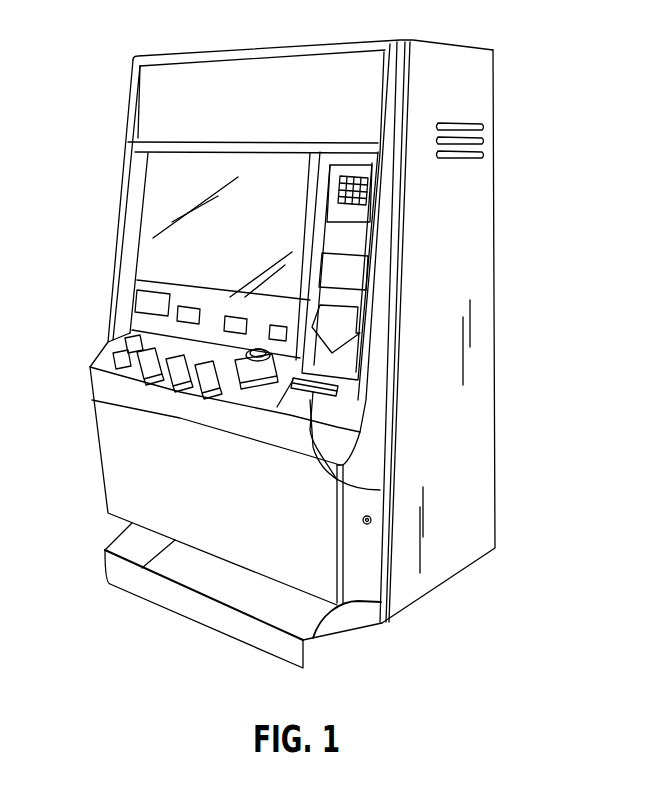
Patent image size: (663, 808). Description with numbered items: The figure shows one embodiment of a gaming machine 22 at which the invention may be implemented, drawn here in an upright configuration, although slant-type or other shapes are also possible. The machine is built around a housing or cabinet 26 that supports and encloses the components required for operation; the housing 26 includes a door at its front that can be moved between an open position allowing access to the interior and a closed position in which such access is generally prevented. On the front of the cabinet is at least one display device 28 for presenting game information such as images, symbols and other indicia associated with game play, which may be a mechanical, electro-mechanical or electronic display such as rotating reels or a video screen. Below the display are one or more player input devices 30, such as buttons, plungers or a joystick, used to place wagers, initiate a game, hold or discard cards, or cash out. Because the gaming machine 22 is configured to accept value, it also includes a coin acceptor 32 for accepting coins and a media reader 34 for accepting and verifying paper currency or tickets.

The gaming machine 22 is at (512, 85).
The housing or cabinet 26 is at (478, 239).
The display device 28 is at (160, 200).
The player input devices 30 is at (165, 392).
The coin acceptor 32 is at (245, 378).
The media reader 34 is at (380, 490).